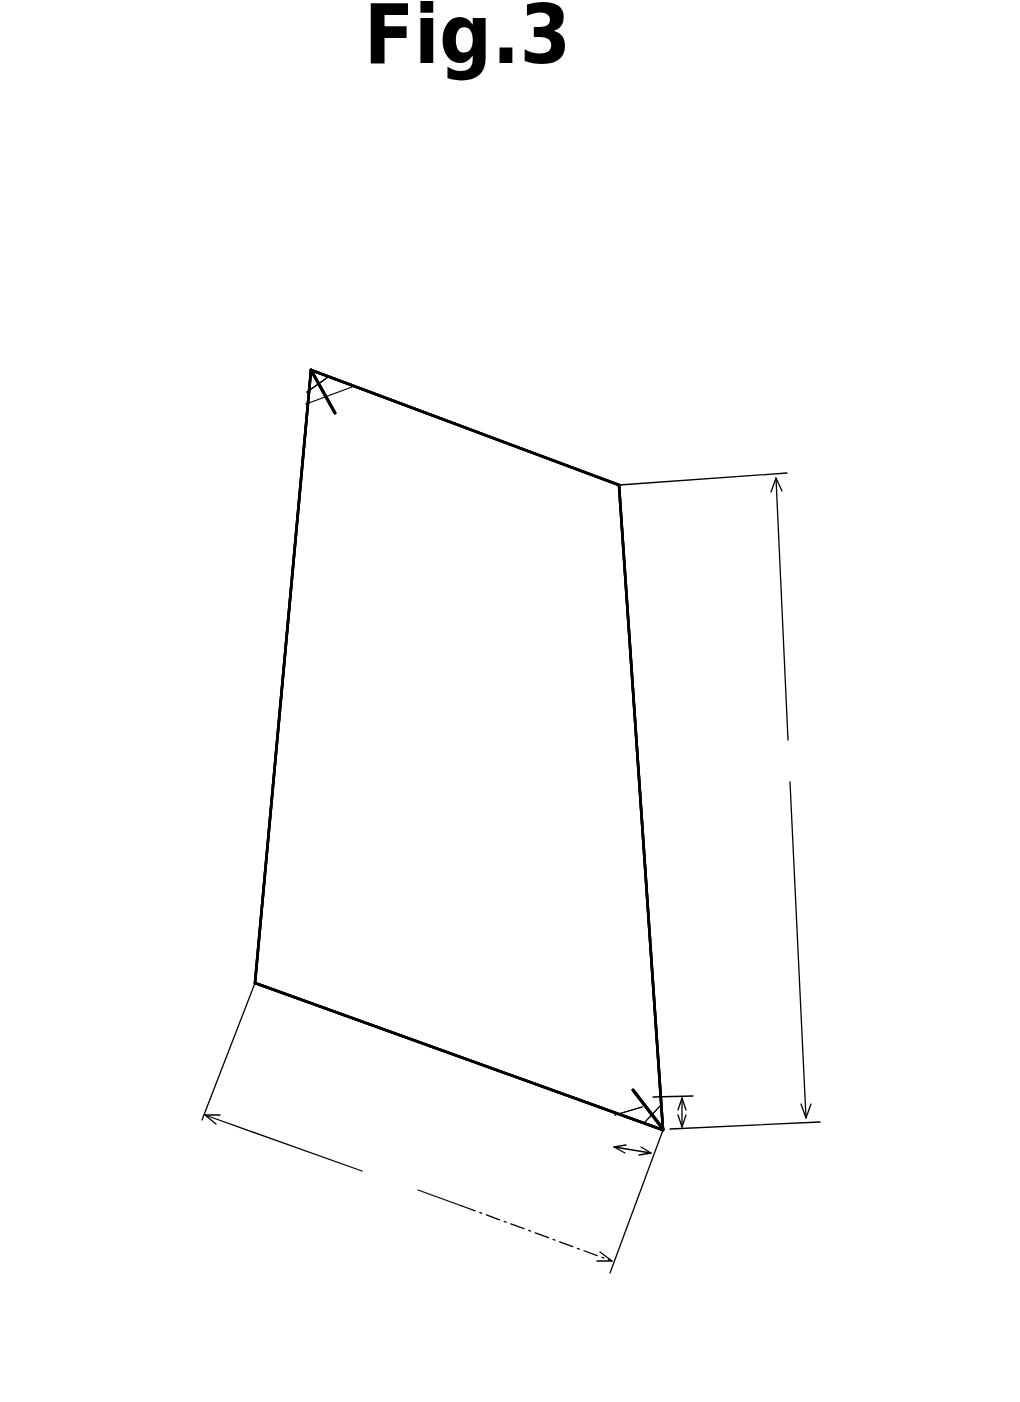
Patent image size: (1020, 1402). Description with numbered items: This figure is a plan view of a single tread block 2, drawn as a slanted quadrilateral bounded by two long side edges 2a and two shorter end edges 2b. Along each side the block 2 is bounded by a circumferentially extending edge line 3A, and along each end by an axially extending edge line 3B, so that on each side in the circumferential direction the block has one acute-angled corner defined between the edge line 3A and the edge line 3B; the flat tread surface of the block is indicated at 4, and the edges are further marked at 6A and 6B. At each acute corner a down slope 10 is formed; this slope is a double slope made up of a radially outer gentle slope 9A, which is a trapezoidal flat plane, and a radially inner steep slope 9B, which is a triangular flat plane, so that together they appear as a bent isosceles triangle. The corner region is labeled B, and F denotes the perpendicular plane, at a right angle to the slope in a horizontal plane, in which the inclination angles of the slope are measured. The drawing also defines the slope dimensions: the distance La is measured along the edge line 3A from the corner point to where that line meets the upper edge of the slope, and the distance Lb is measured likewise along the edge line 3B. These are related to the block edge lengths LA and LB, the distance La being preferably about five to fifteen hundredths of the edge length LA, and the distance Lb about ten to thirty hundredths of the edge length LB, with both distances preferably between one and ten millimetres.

The block 2 is at (257, 628).
The side edge of panel 2a is at (278, 680).
The end edge of panel 2b is at (551, 458).
The circumferentially extending edge line 3A is at (270, 760).
The axially extending edge line 3B is at (482, 418).
The panel surface 4 is at (352, 920).
The bevel edge 6A is at (500, 1080).
The bevel edge 6B is at (655, 995).
The radially outer gentle slope 9A is at (310, 390).
The radially inner steep slope 9B is at (316, 370).
The down slope 10 is at (172, 289).
The bent portion B is at (340, 368).
The perpendicular plane F is at (338, 396).
The block edge length LA is at (719, 801).
The block edge length LB is at (432, 1128).
The distance La is at (685, 1110).
The distance Lb is at (628, 1148).